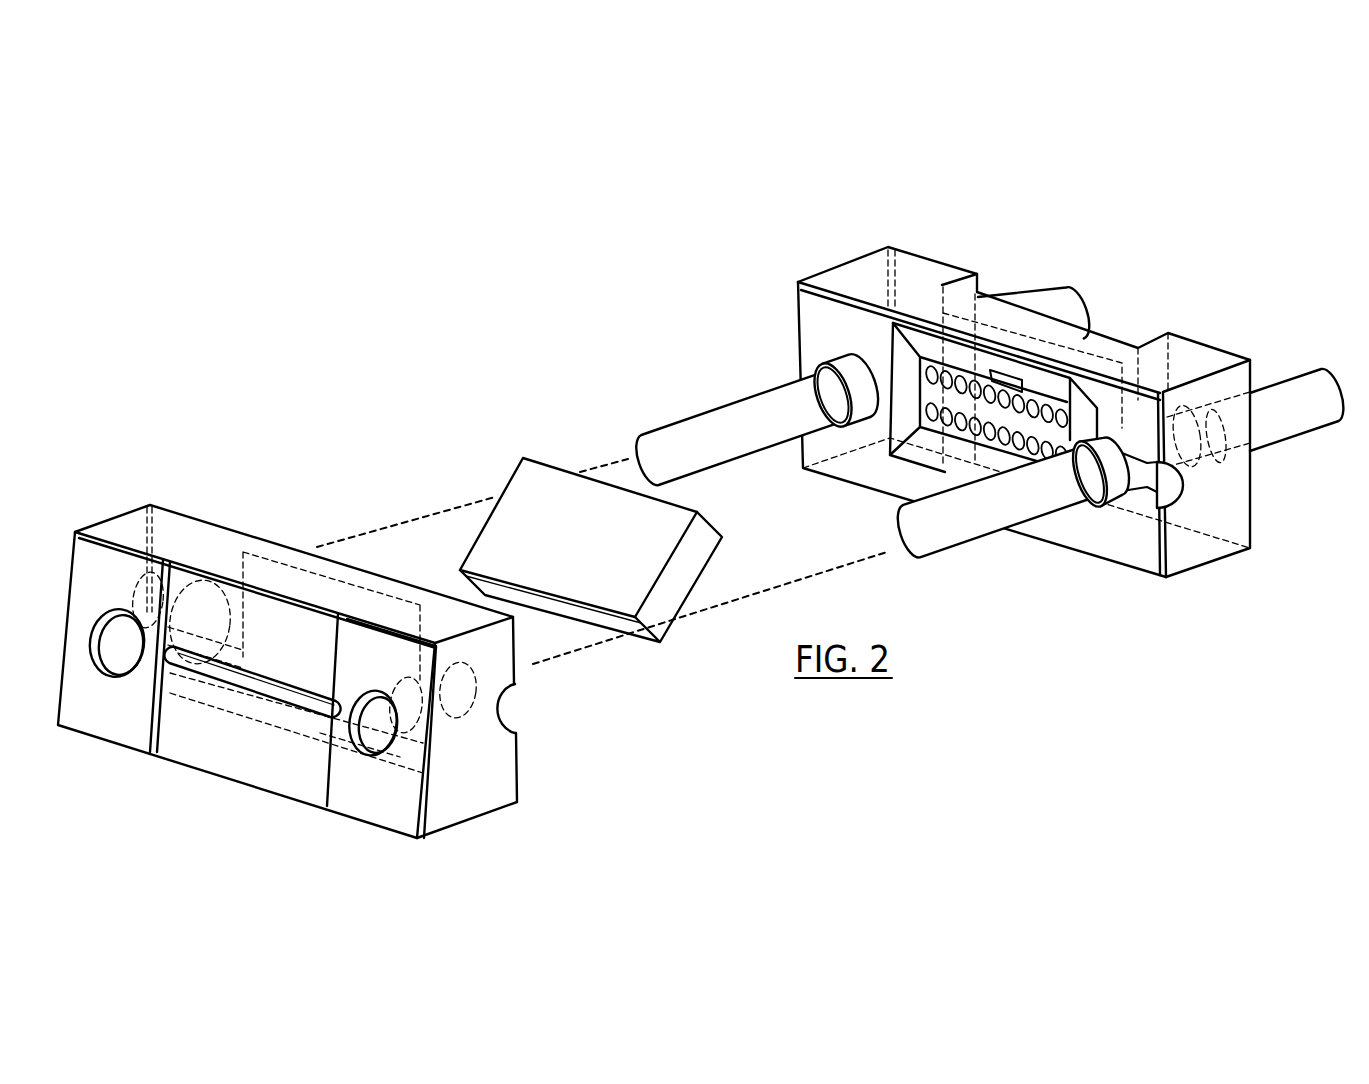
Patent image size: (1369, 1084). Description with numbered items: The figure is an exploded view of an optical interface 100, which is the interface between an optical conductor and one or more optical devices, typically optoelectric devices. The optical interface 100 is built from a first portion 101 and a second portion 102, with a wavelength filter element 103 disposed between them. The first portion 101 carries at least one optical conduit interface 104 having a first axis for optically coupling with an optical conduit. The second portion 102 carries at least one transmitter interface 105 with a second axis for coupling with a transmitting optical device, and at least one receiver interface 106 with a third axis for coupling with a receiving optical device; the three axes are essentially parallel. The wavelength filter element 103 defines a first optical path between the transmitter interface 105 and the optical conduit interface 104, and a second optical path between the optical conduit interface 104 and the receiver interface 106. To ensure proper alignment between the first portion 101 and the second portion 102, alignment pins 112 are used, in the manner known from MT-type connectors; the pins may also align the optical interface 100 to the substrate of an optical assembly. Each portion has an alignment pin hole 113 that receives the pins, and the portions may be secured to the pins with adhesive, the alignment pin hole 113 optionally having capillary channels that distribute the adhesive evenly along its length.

The optical interface 100 is at (700, 500).
The first portion 101 is at (287, 662).
The second portion 102 is at (989, 394).
The wavelength filter element 103 is at (512, 475).
The optical conduit interface 104 is at (188, 652).
The transmitter interface 105 is at (927, 415).
The receiver interface 106 is at (1050, 403).
The alignment pins 112 is at (1293, 372).
The alignment pin hole 113 is at (375, 724).